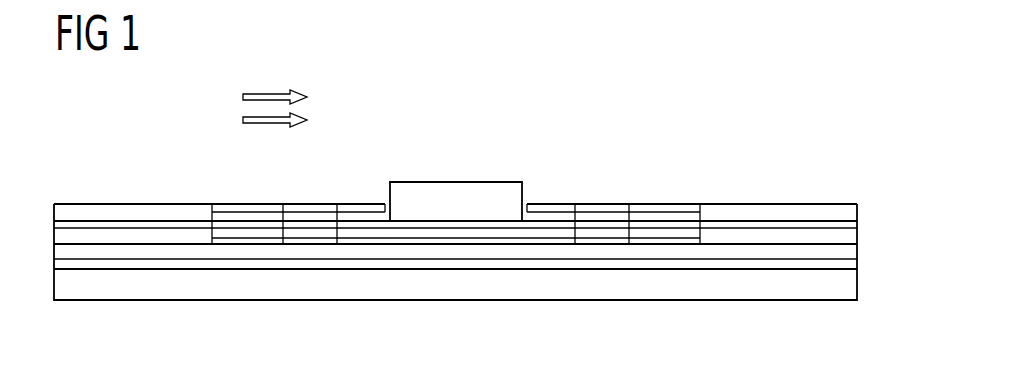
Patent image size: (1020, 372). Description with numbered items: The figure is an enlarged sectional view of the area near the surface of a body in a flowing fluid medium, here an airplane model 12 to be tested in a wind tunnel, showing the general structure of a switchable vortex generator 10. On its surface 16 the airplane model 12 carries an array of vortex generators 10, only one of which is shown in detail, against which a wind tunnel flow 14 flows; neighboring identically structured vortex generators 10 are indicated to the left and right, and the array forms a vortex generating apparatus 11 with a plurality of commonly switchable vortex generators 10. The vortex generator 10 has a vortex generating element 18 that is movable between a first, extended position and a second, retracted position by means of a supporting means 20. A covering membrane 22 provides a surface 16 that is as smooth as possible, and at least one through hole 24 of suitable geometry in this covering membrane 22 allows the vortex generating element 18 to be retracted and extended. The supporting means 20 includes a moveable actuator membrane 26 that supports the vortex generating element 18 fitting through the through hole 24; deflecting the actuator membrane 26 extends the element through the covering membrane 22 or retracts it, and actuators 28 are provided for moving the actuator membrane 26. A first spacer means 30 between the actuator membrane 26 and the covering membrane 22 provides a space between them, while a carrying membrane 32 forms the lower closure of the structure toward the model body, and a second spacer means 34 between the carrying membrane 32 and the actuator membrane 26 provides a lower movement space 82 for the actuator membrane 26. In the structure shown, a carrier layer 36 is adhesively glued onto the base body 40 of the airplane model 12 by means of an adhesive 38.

The vortex generator 10 is at (68, 165).
The vortex generating apparatus 11 is at (650, 84).
The airplane model 12 is at (668, 292).
The wind tunnel flow 14 is at (243, 120).
The surface 16 is at (326, 203).
The vortex generating element 18 is at (460, 187).
The supporting means 20 is at (542, 248).
The covering membrane 22 is at (548, 208).
The through hole 24 is at (385, 203).
The actuator membrane 26 is at (375, 225).
The actuators 28 is at (267, 240).
The first spacer means 30 is at (193, 210).
The carrying membrane 32 is at (437, 240).
The second spacer means 34 is at (153, 237).
The carrier layer 36 is at (397, 250).
The adhesive 38 is at (587, 265).
The base body 40 is at (633, 283).
The space 82 is at (480, 228).